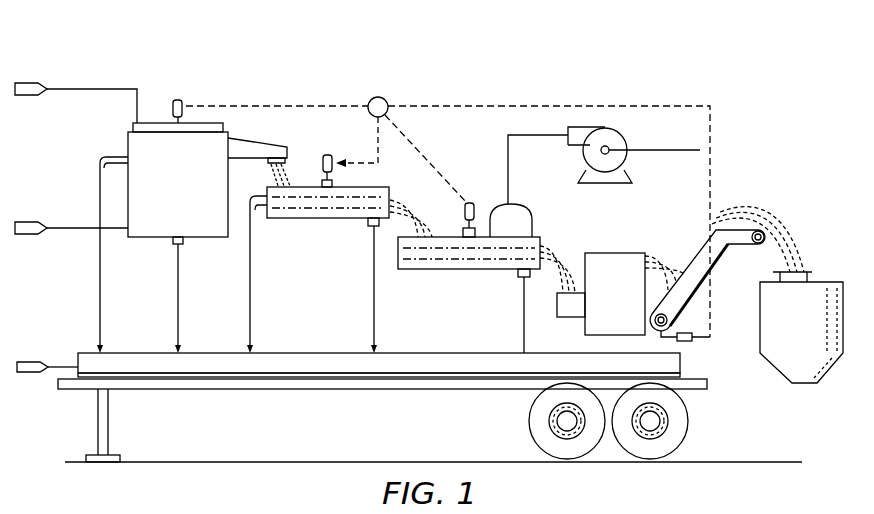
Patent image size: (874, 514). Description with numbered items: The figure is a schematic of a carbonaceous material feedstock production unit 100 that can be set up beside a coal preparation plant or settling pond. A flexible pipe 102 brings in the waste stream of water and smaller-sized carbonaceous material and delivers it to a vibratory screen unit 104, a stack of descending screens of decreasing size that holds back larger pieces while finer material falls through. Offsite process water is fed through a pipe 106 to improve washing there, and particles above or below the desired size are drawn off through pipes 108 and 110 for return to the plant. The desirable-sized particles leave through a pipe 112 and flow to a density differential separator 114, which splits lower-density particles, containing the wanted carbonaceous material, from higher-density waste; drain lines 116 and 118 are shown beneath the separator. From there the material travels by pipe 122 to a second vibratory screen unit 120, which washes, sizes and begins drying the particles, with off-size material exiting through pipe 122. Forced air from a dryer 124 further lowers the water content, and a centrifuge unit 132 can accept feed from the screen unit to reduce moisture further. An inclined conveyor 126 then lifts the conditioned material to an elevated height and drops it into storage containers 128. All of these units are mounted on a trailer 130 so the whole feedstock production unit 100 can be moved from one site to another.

The carbonaceous material feedstock production unit 100 is at (590, 58).
The pipe 102 is at (85, 85).
The vibratory screen unit 104 is at (197, 190).
The pipe 106 is at (70, 220).
The pipe 108 is at (175, 307).
The pipe 110 is at (98, 287).
The pipe 112 is at (257, 143).
The density differential separator 114 is at (312, 221).
The conveyor drain line 116 is at (254, 284).
The conveyor outlet line 118 is at (374, 322).
The vibratory screen unit 120 is at (450, 270).
The pipe 122 is at (456, 192).
The dryer 124 is at (610, 185).
The inclined conveyor 126 is at (740, 245).
The storage containers 128 is at (823, 281).
The trailer 130 is at (303, 391).
The centrifuge unit 132 is at (633, 305).